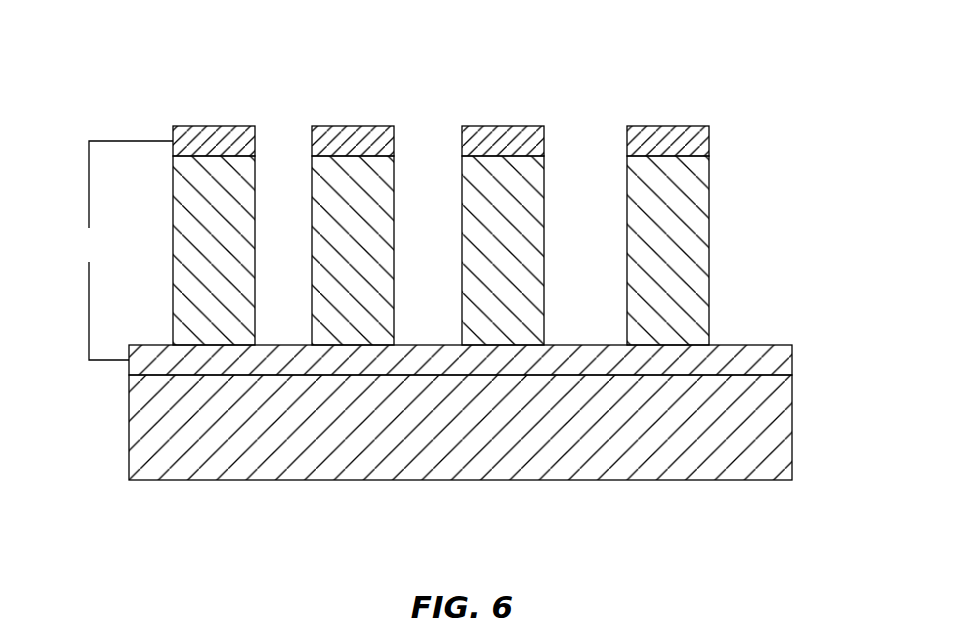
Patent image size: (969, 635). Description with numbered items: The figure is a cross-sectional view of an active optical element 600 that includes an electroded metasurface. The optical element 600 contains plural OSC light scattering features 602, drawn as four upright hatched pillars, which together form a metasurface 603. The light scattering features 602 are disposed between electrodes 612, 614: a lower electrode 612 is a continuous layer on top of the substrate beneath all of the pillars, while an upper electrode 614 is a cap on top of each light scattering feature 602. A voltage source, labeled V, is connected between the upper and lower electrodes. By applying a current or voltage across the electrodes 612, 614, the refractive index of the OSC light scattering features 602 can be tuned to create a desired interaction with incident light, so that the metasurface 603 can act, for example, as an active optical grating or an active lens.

The optical element 600 is at (125, 107).
The OSC light scattering features 602 is at (709, 207).
The metasurface 603 is at (787, 238).
The electrode 612 is at (775, 345).
The electrode 614 is at (667, 126).